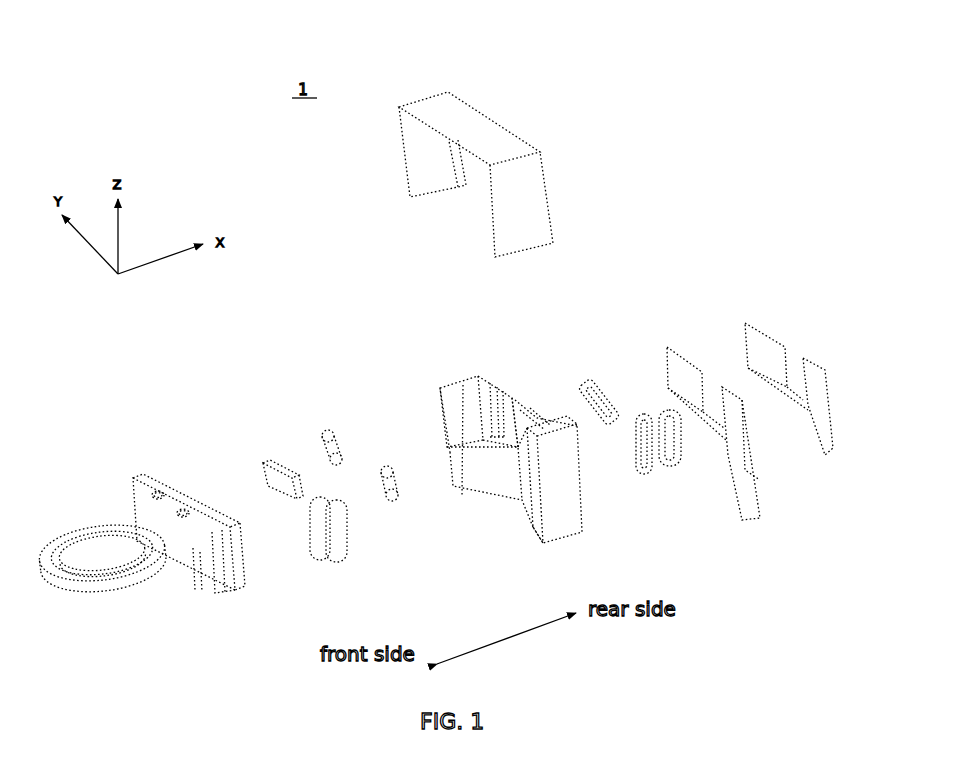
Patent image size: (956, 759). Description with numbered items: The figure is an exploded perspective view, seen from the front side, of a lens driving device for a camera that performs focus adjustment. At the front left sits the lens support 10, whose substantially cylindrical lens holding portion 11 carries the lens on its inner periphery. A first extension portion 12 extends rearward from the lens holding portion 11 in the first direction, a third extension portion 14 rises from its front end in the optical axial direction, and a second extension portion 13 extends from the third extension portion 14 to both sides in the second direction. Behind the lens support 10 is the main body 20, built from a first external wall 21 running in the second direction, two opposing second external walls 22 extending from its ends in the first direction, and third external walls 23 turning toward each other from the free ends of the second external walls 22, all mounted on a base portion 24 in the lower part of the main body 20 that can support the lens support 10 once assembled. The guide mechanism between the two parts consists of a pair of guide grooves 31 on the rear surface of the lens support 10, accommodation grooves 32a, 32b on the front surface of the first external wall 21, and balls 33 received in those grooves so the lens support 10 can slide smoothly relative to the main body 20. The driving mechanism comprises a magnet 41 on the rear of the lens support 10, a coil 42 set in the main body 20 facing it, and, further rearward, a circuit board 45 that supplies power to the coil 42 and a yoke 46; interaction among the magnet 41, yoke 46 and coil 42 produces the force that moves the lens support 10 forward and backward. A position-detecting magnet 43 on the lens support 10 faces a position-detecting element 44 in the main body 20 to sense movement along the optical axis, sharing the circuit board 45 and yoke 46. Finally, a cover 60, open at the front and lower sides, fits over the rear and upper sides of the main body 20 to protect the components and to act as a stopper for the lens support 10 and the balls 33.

The lens support 10 is at (112, 470).
The lens holding portion 11 is at (92, 588).
The first extension portion 12 is at (162, 575).
The second extension portion 13 is at (236, 589).
The third extension portion 14 is at (193, 550).
The main body 20 is at (435, 372).
The first external wall 21 is at (512, 397).
The second external walls 22 is at (460, 380).
The third external walls 23 is at (445, 405).
The base portion 24 is at (488, 483).
The guide grooves 31 is at (153, 478).
The accommodation groove 32a is at (483, 383).
The accommodation groove 32b is at (538, 420).
The balls 33 is at (338, 452).
The magnet 41 is at (272, 462).
The coil 42 is at (598, 382).
The position-detecting magnet 43 is at (338, 538).
The position-detecting element 44 is at (643, 467).
The circuit board 45 is at (747, 492).
The yoke 46 is at (822, 427).
The cover 60 is at (485, 130).